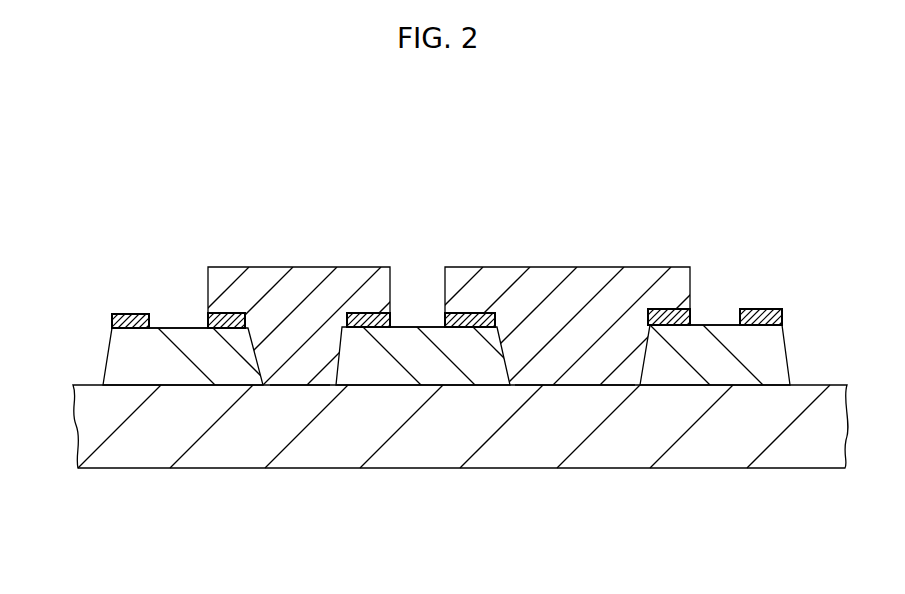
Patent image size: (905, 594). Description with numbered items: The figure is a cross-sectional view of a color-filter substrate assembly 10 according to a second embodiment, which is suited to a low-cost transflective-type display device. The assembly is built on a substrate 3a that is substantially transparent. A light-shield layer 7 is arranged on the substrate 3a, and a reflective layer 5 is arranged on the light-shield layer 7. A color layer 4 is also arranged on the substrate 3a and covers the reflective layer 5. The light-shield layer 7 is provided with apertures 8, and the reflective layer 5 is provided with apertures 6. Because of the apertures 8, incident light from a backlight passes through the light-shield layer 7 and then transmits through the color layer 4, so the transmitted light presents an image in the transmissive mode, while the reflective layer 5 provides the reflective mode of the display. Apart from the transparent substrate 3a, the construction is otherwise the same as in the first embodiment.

The substrate 3a is at (742, 469).
The color layer 4 is at (288, 277).
The reflective layer 5 is at (116, 314).
The apertures 6 is at (180, 321).
The light-shield layer 7 is at (133, 350).
The apertures 8 is at (293, 390).
The color-filter substrate assembly 10 is at (505, 152).